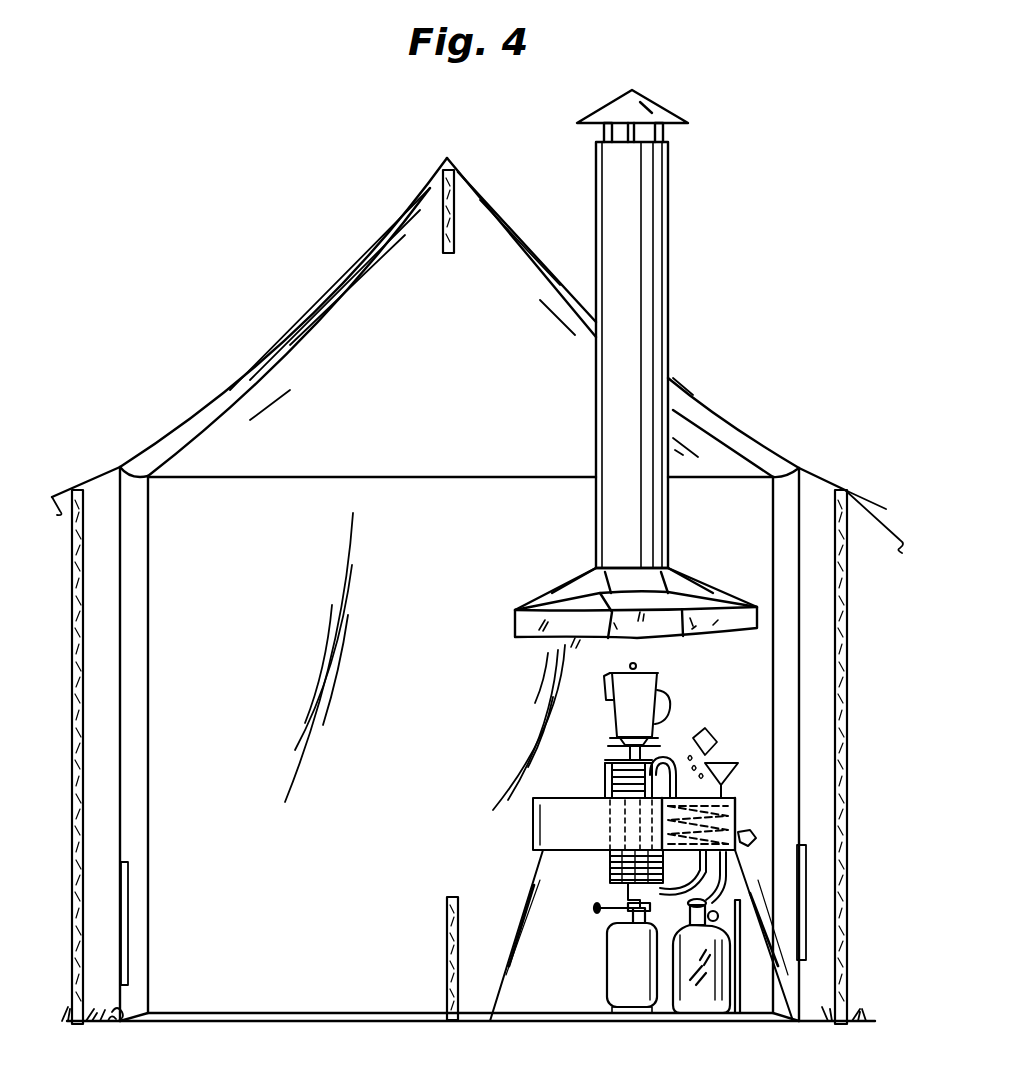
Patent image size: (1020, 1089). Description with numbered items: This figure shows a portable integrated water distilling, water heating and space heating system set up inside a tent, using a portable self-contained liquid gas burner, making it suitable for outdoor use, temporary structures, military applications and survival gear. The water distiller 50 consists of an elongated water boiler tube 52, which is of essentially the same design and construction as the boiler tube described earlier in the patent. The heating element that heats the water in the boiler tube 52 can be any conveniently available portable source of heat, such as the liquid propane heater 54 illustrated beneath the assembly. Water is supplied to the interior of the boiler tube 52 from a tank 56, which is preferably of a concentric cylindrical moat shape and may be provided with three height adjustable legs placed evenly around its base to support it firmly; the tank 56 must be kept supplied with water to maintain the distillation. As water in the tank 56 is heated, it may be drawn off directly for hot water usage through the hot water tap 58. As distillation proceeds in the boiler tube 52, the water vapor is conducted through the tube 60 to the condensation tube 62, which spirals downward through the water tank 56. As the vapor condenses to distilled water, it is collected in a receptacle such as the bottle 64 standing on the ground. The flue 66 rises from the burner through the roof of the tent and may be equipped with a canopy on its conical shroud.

The water distiller 50 is at (410, 817).
The elongated water boiler tube 52 is at (609, 878).
The liquid propane heater 54 is at (618, 978).
The water tank 56 is at (745, 808).
The hot water tap 58 is at (755, 840).
The tube 60 is at (667, 757).
The condensation tube 62 is at (733, 792).
The bottle 64 is at (727, 988).
The flue 66 is at (524, 602).